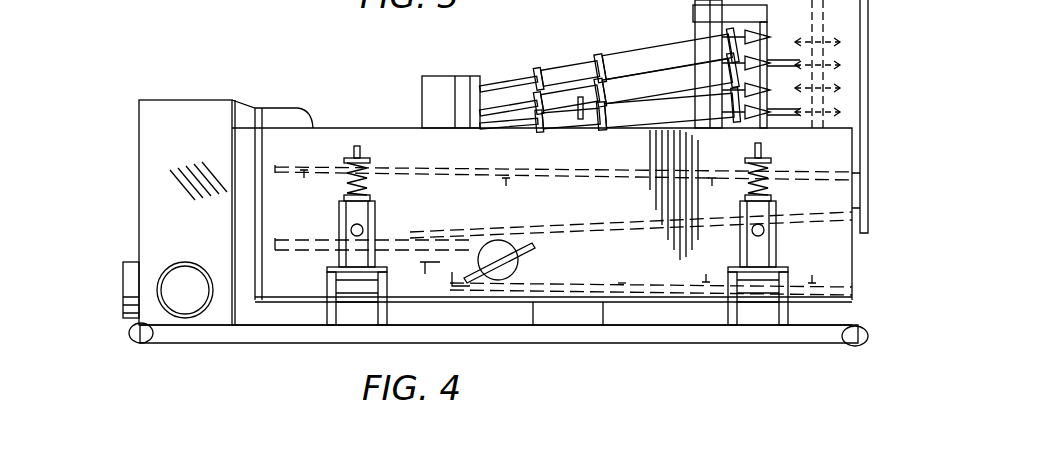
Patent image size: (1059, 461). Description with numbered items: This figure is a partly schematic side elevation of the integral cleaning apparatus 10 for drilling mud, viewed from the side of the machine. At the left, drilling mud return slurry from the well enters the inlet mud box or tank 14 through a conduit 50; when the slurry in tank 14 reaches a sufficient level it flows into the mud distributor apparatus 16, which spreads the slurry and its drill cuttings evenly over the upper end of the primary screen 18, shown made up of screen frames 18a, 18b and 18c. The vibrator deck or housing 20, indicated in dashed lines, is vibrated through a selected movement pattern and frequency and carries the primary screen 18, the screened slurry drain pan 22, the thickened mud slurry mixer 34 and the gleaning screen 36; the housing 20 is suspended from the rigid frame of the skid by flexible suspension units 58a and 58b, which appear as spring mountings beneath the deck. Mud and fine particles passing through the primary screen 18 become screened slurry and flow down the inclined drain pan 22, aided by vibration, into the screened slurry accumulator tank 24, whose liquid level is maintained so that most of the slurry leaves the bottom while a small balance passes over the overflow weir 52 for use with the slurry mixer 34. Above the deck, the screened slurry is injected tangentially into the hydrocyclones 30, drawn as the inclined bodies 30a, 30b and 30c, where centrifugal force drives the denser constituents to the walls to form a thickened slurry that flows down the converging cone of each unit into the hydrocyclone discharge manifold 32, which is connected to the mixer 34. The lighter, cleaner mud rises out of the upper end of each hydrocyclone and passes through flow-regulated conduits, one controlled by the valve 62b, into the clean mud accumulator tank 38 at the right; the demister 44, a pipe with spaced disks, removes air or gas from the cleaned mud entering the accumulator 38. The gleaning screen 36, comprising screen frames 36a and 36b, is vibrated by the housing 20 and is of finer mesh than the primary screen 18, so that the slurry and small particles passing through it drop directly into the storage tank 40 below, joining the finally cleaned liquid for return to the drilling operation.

The integral cleaning apparatus 10 is at (208, 42).
The inlet mud box or tank 14 is at (148, 146).
The mud distributor apparatus 16 is at (297, 115).
The primary screen 18 is at (547, 166).
The screen frame 18a is at (304, 182).
The screen frame 18b is at (506, 188).
The screen frame 18c is at (712, 188).
The vibrator deck or housing 20 is at (336, 138).
The screened slurry drain pan 22 is at (612, 225).
The screened slurry accumulator tank 24 is at (270, 260).
The hydrocyclones 30 is at (568, 42).
The hydrocyclone 30a is at (615, 62).
The hydrocyclone 30b is at (645, 78).
The hydrocyclone 30c is at (670, 107).
The hydrocyclone discharge manifold 32 is at (462, 76).
The thickened mud slurry mixer 34 is at (518, 264).
The gleaning screen 36 is at (706, 272).
The screen frame 36a is at (618, 280).
The screen frame 36b is at (812, 272).
The clean mud accumulator tank 38 is at (868, 63).
The storage tank 40 is at (637, 320).
The demister 44 is at (870, 10).
The conduit 50 is at (127, 262).
The overflow weir 52 is at (440, 266).
The flexible suspension unit 58a is at (368, 185).
The flexible suspension unit 58b is at (745, 160).
The valve 62b is at (772, 52).